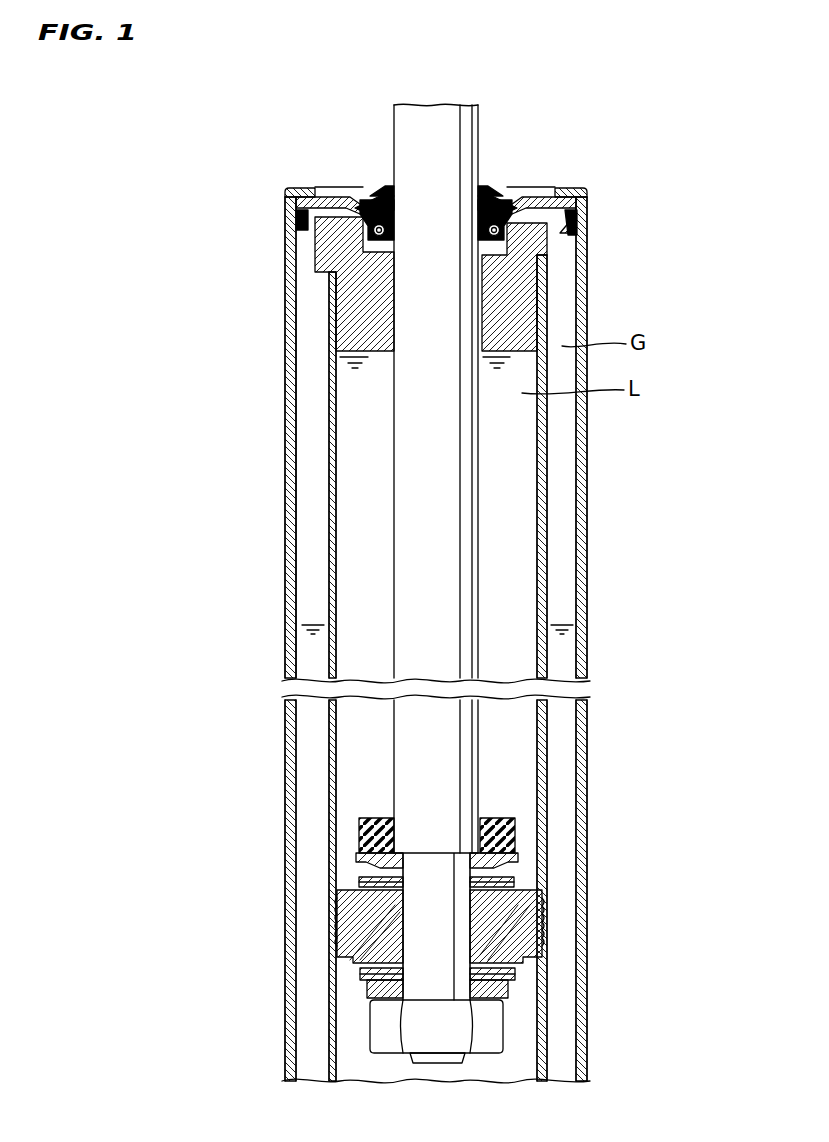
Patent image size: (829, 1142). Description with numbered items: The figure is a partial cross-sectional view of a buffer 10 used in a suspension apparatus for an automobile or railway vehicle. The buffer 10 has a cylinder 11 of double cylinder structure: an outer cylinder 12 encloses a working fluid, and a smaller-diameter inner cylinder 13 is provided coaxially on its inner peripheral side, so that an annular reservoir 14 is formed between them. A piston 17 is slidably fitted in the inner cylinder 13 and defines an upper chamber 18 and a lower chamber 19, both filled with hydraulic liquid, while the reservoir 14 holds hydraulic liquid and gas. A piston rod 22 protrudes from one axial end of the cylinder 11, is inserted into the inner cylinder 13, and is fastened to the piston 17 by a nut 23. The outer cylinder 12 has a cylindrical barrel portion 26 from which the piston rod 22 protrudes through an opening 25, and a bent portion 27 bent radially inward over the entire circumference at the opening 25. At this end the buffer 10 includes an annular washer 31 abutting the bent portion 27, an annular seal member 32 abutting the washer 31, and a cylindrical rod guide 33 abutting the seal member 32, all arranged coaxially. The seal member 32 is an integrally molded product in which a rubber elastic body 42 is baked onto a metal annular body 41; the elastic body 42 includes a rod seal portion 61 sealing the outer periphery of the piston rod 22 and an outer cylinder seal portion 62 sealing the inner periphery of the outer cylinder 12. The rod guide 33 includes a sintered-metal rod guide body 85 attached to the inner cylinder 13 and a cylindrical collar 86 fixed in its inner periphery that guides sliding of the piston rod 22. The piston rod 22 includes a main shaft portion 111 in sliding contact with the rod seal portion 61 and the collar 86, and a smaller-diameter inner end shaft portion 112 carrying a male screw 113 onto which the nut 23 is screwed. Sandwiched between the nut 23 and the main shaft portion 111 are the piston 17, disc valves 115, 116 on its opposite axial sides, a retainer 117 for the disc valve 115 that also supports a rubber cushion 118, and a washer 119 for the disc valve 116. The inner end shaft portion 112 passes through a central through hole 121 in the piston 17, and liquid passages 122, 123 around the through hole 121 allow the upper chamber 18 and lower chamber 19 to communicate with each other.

The buffer 10 is at (617, 130).
The cylinder 11 is at (592, 428).
The outer cylinder 12 is at (590, 471).
The inner cylinder 13 is at (548, 529).
The reservoir 14 is at (566, 577).
The piston 17 is at (545, 930).
The upper chamber 18 is at (530, 737).
The lower chamber 19 is at (530, 1022).
The piston rod 22 is at (485, 121).
The nut 23 is at (380, 1025).
The opening 25 is at (332, 197).
The barrel portion 26 is at (296, 433).
The bent portion 27 is at (305, 190).
The washer 31 is at (548, 197).
The seal member 32 is at (382, 178).
The rod guide 33 is at (305, 262).
The annular body 41 is at (528, 205).
The elastic body 42 is at (371, 199).
The rod seal portion 61 is at (386, 228).
The outer cylinder seal portion 62 is at (302, 220).
The rod guide body 85 is at (538, 305).
The collar 86 is at (396, 333).
The main shaft portion 111 is at (410, 471).
The inner end shaft portion 112 is at (413, 937).
The male screw 113 is at (420, 1058).
The disc valve 115 is at (520, 879).
The disc valve 116 is at (520, 974).
The retainer 117 is at (520, 842).
The rubber cushion 118 is at (503, 822).
The washer 119 is at (370, 990).
The through hole 121 is at (405, 896).
The liquid passage 122 is at (345, 896).
The liquid passage 123 is at (548, 904).